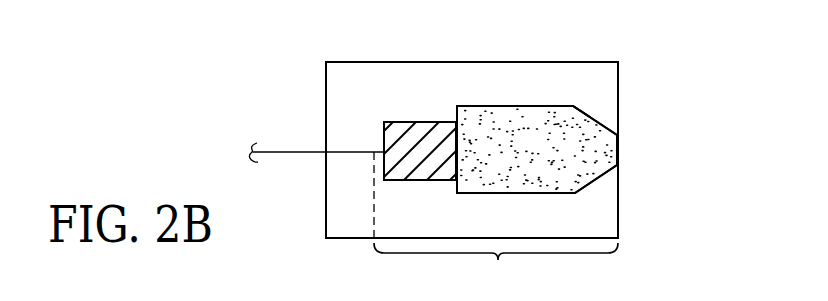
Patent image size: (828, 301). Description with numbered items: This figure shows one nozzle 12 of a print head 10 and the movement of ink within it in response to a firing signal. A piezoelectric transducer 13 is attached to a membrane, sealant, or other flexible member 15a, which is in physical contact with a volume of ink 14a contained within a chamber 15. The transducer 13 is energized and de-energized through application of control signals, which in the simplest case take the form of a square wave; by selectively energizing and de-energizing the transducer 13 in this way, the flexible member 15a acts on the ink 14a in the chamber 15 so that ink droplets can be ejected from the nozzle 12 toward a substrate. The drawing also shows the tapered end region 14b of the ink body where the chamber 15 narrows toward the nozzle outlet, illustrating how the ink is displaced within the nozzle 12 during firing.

The housing 10 is at (341, 62).
The nozzle 12 is at (496, 220).
The piezoelectric transducer 13 is at (417, 137).
The volume of ink 14a is at (525, 135).
The tapered tip 14b is at (618, 148).
The chamber 15 is at (573, 106).
The flexible member 15a is at (458, 139).